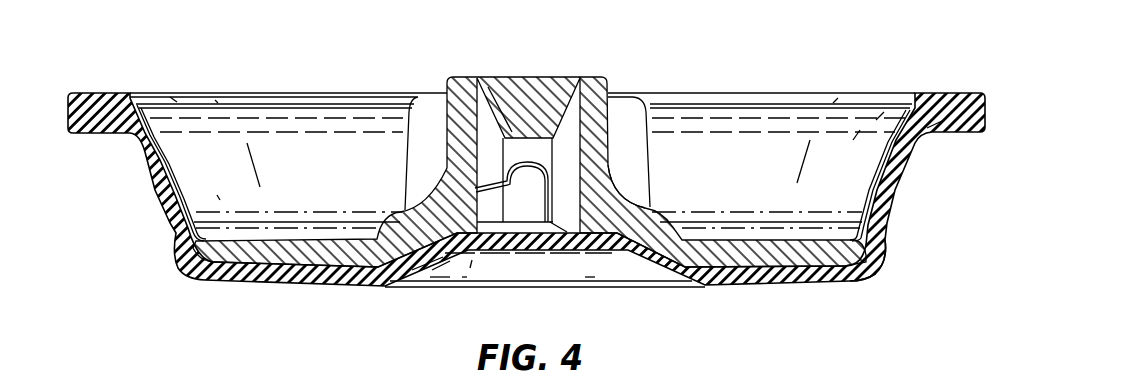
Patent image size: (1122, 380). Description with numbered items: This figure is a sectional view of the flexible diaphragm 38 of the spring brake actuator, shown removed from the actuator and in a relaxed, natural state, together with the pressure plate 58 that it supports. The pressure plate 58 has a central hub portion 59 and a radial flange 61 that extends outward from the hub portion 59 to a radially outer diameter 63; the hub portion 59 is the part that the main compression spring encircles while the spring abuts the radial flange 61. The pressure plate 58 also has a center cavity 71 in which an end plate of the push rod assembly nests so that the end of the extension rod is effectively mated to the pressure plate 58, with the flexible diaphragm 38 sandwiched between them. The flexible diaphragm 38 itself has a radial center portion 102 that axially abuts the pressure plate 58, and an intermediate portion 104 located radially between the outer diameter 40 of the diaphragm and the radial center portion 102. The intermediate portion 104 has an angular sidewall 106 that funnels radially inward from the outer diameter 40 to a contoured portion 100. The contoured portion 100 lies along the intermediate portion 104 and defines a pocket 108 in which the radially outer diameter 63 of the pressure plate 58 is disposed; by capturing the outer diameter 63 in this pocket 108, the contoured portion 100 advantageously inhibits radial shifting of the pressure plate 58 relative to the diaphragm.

The flexible diaphragm 38 is at (382, 289).
The outer diameter 40 is at (973, 94).
The pressure plate 58 is at (667, 207).
The hub portion 59 is at (609, 92).
The radial flange 61 is at (316, 240).
The radially outer diameter 63 is at (868, 254).
The center cavity 71 is at (601, 255).
The contoured portion 100 is at (160, 233).
The radial center portion 102 is at (710, 285).
The intermediate portion 104 is at (159, 202).
The angular sidewall 106 is at (170, 153).
The pocket 108 is at (198, 236).